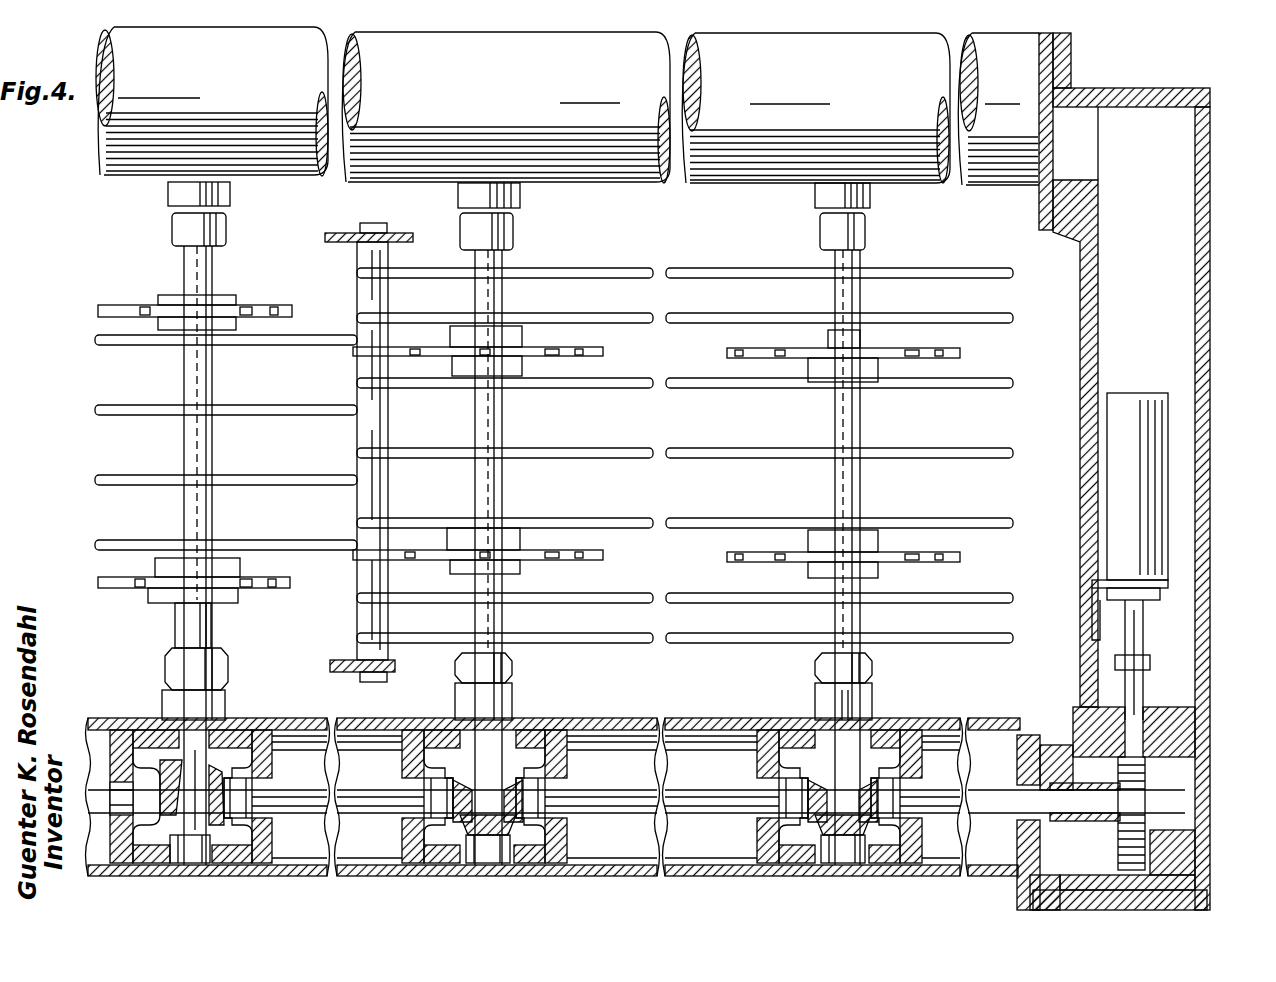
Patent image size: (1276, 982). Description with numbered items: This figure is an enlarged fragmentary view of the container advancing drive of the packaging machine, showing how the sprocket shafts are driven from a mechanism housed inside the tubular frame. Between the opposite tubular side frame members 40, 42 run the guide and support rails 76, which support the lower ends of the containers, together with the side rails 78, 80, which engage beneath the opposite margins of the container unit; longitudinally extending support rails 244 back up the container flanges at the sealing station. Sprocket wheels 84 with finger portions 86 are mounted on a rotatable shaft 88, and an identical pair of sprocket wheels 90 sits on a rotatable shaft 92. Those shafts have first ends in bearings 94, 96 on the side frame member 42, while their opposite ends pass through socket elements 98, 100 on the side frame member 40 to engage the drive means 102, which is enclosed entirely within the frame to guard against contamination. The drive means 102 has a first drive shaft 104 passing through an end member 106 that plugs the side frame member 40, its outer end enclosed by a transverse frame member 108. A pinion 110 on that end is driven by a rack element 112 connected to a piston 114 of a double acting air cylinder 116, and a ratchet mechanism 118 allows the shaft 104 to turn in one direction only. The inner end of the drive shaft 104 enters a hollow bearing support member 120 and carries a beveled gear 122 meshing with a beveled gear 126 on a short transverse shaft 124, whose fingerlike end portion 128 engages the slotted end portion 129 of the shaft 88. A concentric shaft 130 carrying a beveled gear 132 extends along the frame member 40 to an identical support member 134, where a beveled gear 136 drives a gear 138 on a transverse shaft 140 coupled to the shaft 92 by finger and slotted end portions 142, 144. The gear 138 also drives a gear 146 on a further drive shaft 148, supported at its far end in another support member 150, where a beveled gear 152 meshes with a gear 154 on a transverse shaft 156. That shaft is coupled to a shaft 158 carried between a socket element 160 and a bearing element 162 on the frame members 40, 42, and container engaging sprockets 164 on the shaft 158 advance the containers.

The side frame member 40 is at (603, 718).
The side frame member 42 is at (1003, 75).
The guide and support rails 76 is at (700, 520).
The side guide and support rail 78 is at (706, 643).
The side guide and support rail 80 is at (618, 270).
The sprocket wheels 84 is at (745, 358).
The finger portions 86 is at (848, 350).
The rotatable shaft 88 is at (822, 250).
The sprocket wheels 90 is at (575, 352).
The rotatable shaft 92 is at (504, 300).
The bearing 94 is at (870, 206).
The bearing 96 is at (518, 204).
The socket element 98 is at (872, 712).
The socket element 100 is at (505, 712).
The drive means 102 is at (745, 820).
The drive shaft 104 is at (988, 810).
The end member 106 is at (1040, 880).
The transverse frame member 108 is at (1170, 740).
The pinion 110 is at (1150, 778).
The rack element 112 is at (1170, 760).
The piston 114 is at (1145, 632).
The double acting air cylinder 116 is at (1160, 420).
The ratchet mechanism 118 is at (1150, 852).
The bearing support member 120 is at (880, 868).
The beveled gear 122 is at (890, 852).
The transverse shaft 124 is at (805, 860).
The beveled gear 126 is at (790, 768).
The fingerlike end portion 128 is at (800, 745).
The slotted end portion 129 is at (855, 712).
The shaft 130 is at (640, 813).
The beveled gear 132 is at (800, 785).
The support member 134 is at (530, 862).
The beveled gear 136 is at (567, 762).
The gear 138 is at (445, 860).
The transverse shaft 140 is at (402, 770).
The finger end portion 142 is at (520, 740).
The slotted end portion 144 is at (445, 745).
The gear 146 is at (420, 832).
The drive shaft 148 is at (300, 813).
The support member 150 is at (265, 740).
The beveled gear 152 is at (217, 735).
The gear 154 is at (175, 740).
The transverse shaft 156 is at (183, 805).
The shaft 158 is at (183, 632).
The socket element 160 is at (168, 670).
The bearing element 162 is at (175, 196).
The container engaging sprockets 164 is at (100, 306).
The support rails 244 is at (283, 548).